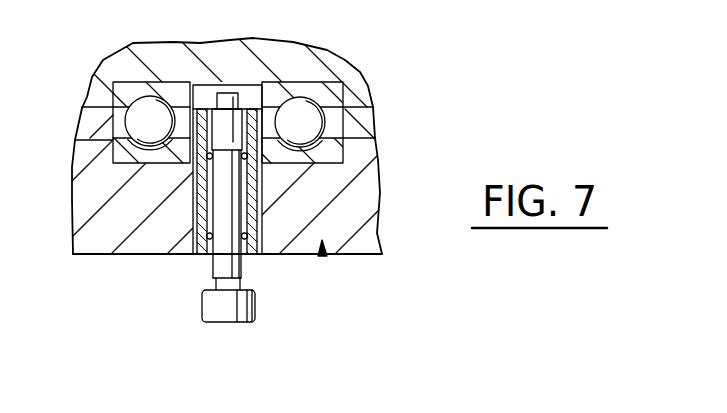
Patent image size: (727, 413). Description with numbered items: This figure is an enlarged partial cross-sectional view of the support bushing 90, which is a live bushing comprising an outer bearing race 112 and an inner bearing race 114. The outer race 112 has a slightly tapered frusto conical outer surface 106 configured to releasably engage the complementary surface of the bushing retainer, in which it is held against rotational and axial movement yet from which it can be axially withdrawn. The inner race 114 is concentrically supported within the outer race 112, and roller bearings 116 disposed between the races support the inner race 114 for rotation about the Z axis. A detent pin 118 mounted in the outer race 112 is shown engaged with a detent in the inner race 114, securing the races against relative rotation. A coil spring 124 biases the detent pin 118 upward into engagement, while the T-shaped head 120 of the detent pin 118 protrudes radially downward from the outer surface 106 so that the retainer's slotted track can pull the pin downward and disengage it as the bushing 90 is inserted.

The bushing 90 is at (324, 256).
The frusto conical outer surface 106 is at (110, 256).
The outer bearing race 112 is at (368, 245).
The inner bearing race 114 is at (337, 60).
The roller bearings 116 is at (300, 102).
The detent pin 118 is at (250, 193).
The T-shaped head 120 is at (237, 312).
The coil spring 124 is at (203, 253).